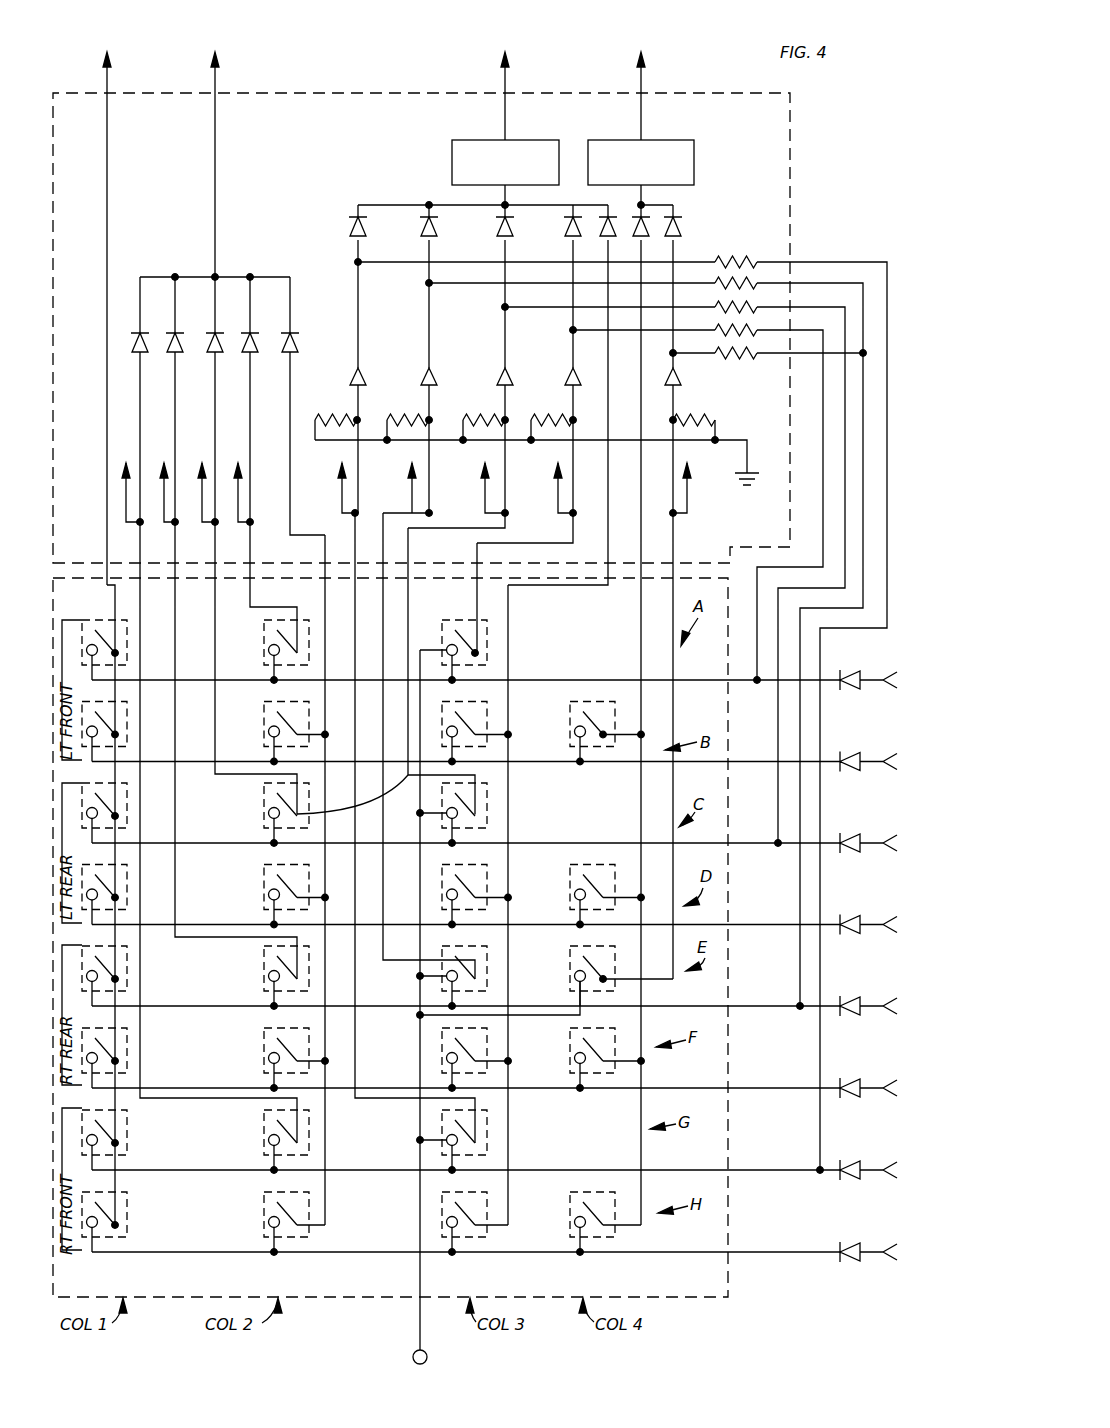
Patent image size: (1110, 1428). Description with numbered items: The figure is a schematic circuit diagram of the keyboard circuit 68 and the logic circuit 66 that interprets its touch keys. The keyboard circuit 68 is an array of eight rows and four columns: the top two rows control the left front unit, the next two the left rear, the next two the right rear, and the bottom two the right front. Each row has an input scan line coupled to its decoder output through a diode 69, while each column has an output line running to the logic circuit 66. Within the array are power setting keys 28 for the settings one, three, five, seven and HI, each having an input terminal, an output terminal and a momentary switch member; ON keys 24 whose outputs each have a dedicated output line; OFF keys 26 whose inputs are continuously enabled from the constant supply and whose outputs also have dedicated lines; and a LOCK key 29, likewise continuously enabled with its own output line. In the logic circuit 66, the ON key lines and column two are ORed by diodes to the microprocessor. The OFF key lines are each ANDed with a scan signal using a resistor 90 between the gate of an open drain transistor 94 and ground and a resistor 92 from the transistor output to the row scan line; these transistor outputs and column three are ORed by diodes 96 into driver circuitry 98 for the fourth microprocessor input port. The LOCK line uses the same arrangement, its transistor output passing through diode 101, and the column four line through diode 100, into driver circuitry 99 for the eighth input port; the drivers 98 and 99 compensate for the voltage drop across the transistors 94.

The ON keys 24 is at (258, 645).
The OFF keys 26 is at (462, 640).
The power setting keys 28 is at (128, 722).
The LOCK key 29 is at (565, 960).
The logic circuit 66 is at (710, 466).
The keyboard circuit 68 is at (175, 568).
The diodes 69 is at (852, 670).
The resistors 90 is at (325, 410).
The resistors 92 is at (755, 262).
The open drain transistors 94 is at (360, 370).
The diodes 96 is at (352, 222).
The driver circuitry 98 is at (545, 140).
The driver circuitry 99 is at (682, 140).
The diode 100 is at (662, 216).
The diode 101 is at (682, 236).